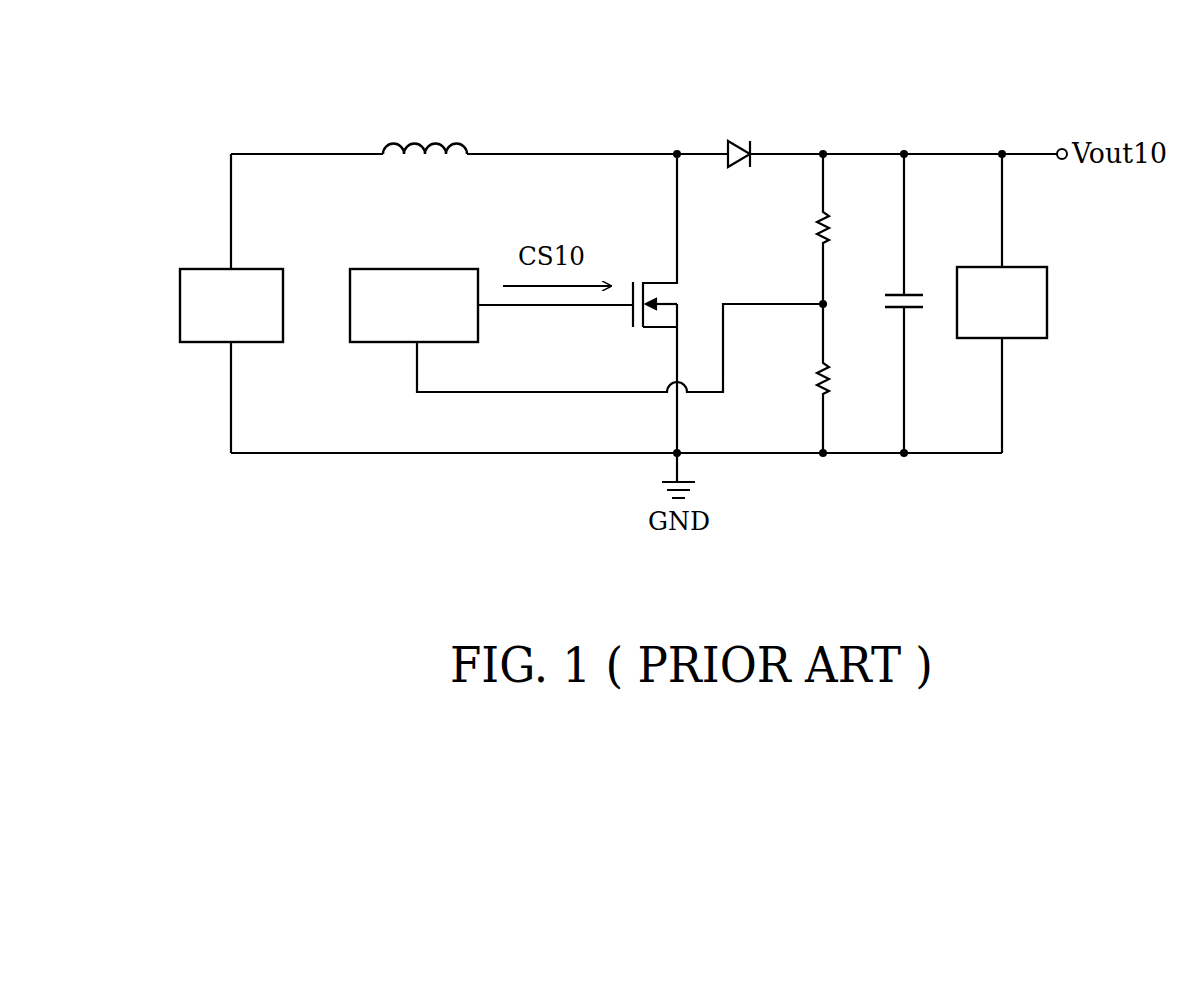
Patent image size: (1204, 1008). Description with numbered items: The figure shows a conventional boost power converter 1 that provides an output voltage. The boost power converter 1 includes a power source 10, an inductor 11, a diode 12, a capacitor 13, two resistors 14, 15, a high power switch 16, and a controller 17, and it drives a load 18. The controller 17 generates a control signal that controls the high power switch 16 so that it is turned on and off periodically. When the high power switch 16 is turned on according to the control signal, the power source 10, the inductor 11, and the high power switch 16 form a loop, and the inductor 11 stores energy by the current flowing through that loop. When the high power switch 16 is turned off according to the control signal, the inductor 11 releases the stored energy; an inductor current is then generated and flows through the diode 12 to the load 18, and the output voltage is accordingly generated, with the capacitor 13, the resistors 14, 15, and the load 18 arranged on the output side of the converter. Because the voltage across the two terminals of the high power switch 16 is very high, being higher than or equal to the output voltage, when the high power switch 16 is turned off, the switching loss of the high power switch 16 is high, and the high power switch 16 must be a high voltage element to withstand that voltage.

The boost power converter 1 is at (224, 57).
The power source 10 is at (263, 268).
The inductor 11 is at (426, 140).
The diode 12 is at (740, 140).
The capacitor 13 is at (893, 290).
The resistor 14 is at (815, 223).
The resistor 15 is at (815, 369).
The high power switch 16 is at (661, 270).
The controller 17 is at (415, 268).
The load 18 is at (1030, 266).